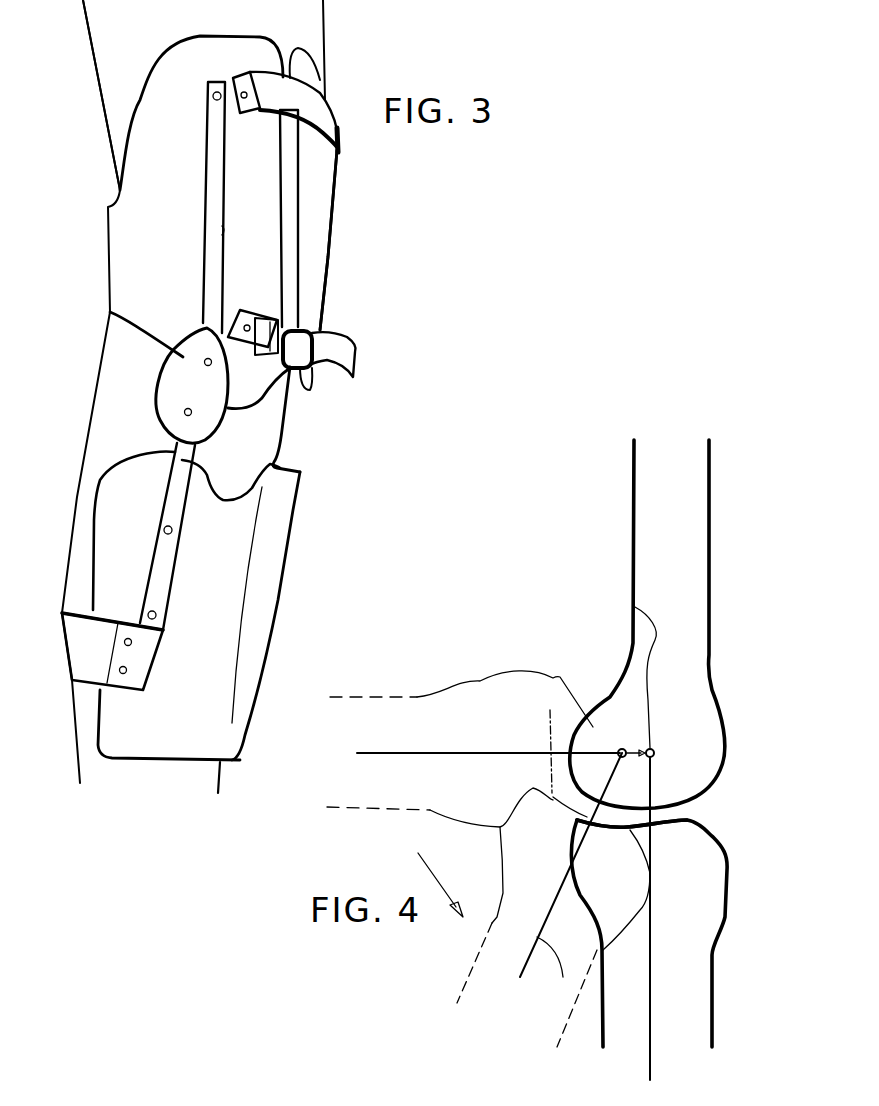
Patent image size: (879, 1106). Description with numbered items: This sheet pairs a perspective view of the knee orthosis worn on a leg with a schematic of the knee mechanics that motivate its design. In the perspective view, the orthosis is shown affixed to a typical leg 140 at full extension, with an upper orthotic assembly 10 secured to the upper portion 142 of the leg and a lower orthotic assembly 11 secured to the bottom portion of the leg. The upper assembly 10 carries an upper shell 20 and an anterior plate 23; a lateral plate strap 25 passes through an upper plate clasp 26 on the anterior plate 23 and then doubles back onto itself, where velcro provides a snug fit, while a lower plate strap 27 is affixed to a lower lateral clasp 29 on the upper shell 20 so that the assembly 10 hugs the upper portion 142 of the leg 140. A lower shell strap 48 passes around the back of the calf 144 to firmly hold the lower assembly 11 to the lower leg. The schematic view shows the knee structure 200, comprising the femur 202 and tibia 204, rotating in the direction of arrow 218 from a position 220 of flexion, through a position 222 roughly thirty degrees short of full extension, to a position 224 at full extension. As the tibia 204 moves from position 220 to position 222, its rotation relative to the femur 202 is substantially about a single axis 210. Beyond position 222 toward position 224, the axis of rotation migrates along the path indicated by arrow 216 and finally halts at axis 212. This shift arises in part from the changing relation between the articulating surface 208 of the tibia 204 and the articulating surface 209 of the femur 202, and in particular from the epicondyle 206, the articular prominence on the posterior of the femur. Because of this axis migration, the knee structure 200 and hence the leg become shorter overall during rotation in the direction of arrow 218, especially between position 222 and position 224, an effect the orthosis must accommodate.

In FIG. 3, the upper orthotic assembly 10 is at (247, 396).
In FIG. 3, the lower orthotic assembly 11 is at (290, 521).
In FIG. 3, the upper shell 20 is at (128, 253).
In FIG. 3, the anterior plate 23 is at (327, 250).
In FIG. 3, the lateral plate strap 25 is at (323, 110).
In FIG. 3, the upper plate clasp 26 is at (340, 153).
In FIG. 3, the lower plate strap 27 is at (345, 358).
In FIG. 3, the lower lateral clasp 29 is at (260, 357).
In FIG. 3, the lower shell strap 48 is at (87, 668).
In FIG. 3, the leg 140 is at (303, 13).
In FIG. 3, the upper portion of leg 142 is at (128, 160).
In FIG. 3, the calf 144 is at (80, 560).
In FIG. 4, the knee structure 200 is at (553, 760).
In FIG. 4, the femur 202 is at (692, 618).
In FIG. 4, the tibia 204 is at (708, 875).
In FIG. 4, the epicondyle 206 is at (555, 687).
In FIG. 4, the articulating surface of the tibia 208 is at (673, 817).
In FIG. 4, the articulating surface of the femur 209 is at (677, 803).
In FIG. 4, the single axis 210 is at (622, 750).
In FIG. 4, the axis 212 is at (650, 748).
In FIG. 4, the arrow 216 is at (635, 607).
In FIG. 4, the arrow 218 is at (425, 875).
In FIG. 4, the position of flexion 220 is at (435, 750).
In FIG. 4, the position at partial extension 222 is at (571, 900).
In FIG. 4, the position of full extension 224 is at (650, 1012).